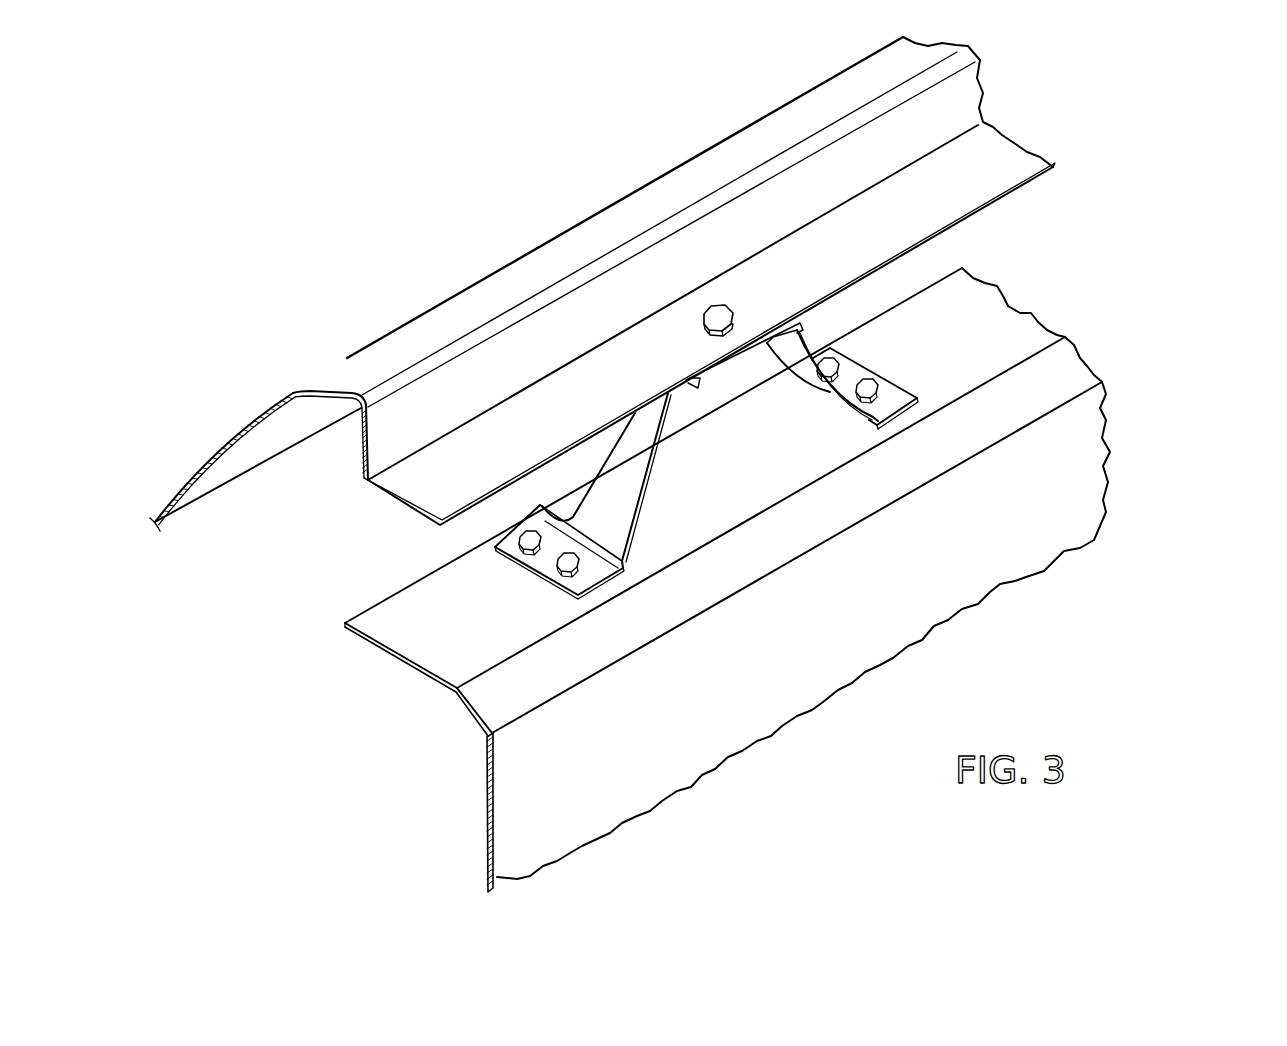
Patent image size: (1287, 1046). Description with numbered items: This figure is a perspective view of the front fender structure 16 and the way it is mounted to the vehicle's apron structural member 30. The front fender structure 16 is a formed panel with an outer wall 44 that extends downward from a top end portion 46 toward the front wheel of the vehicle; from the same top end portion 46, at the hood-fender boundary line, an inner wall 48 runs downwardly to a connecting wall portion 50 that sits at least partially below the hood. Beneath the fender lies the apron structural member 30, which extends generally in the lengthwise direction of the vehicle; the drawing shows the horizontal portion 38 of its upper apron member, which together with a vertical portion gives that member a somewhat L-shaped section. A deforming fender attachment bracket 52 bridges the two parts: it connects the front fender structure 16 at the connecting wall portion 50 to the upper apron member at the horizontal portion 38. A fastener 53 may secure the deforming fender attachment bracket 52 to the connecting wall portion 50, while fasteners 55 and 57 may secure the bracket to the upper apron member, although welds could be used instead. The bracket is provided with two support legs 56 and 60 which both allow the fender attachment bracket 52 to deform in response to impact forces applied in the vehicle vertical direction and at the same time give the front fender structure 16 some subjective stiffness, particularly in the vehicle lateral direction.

The front fender structure 16 is at (481, 248).
The apron structural member 30 is at (1158, 415).
The horizontal portion 38 is at (1033, 332).
The outer wall 44 is at (220, 441).
The top end portion 46 is at (349, 364).
The inner wall 48 is at (378, 435).
The connecting wall portion 50 is at (1013, 153).
The deforming fender attachment bracket 52 is at (893, 365).
The fastener 53 is at (737, 311).
The fastener 55 is at (523, 548).
The support leg 56 is at (655, 563).
The fastener 57 is at (562, 568).
The support leg 60 is at (906, 420).